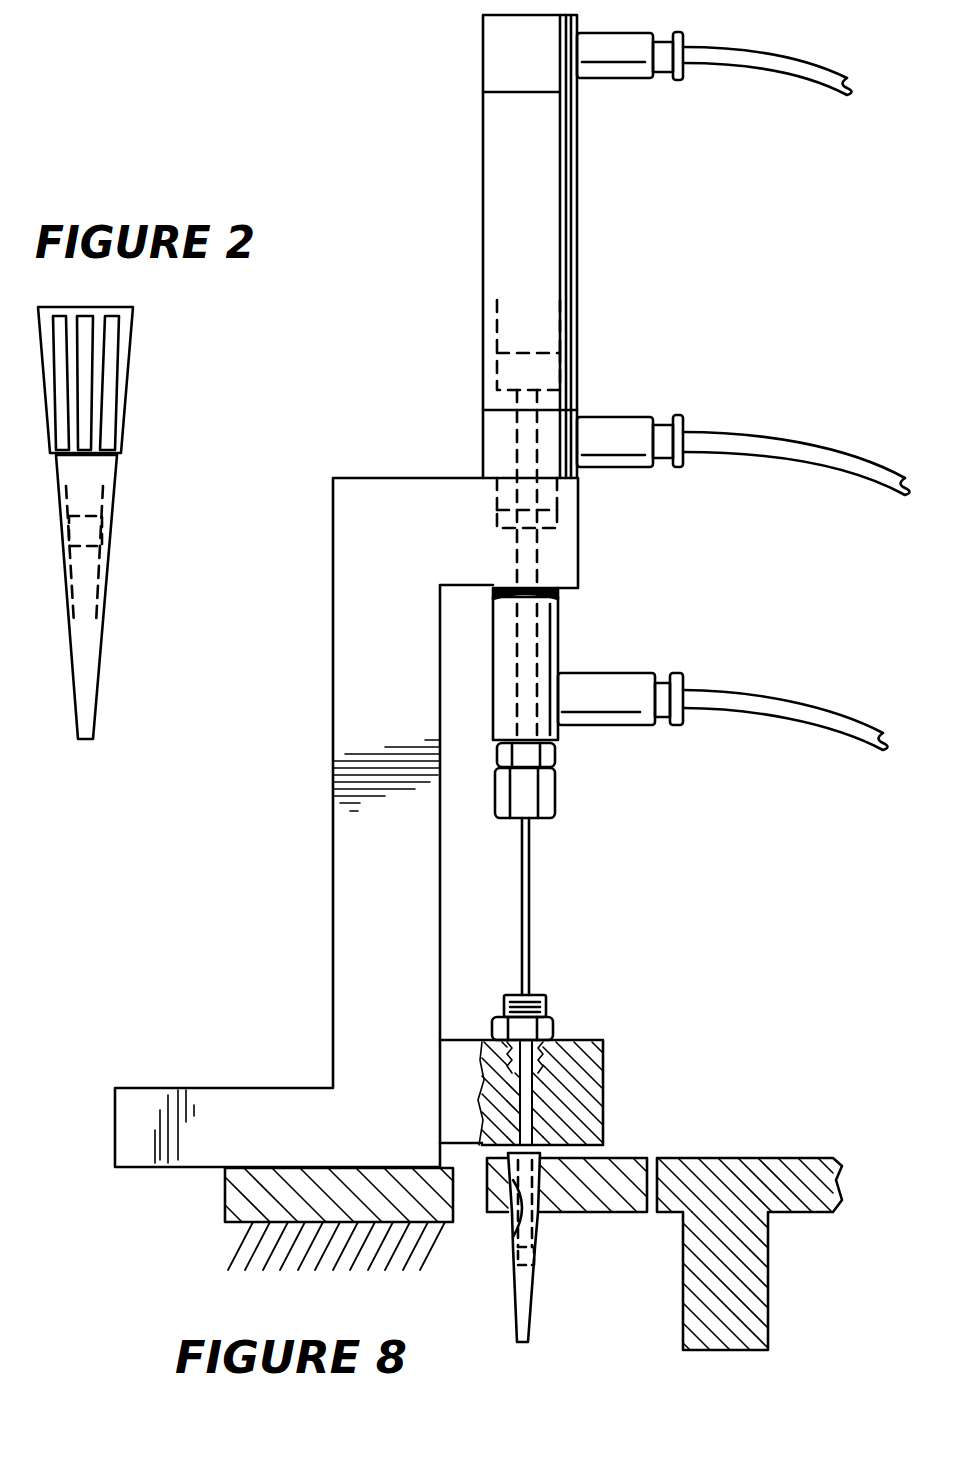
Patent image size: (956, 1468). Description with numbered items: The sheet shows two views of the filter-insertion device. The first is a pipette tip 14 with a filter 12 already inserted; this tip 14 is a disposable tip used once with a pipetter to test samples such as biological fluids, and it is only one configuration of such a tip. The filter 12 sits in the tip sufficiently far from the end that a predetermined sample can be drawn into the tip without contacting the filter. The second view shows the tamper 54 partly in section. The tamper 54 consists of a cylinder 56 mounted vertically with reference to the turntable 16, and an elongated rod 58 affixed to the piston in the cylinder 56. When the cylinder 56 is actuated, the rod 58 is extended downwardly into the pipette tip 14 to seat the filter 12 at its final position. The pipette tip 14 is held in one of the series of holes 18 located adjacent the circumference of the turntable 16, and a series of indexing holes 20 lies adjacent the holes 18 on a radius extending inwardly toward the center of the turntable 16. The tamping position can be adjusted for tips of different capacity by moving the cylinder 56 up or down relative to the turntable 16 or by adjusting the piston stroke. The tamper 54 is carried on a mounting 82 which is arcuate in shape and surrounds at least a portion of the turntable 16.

In FIG. 2, the filter 12 is at (102, 531).
In FIG. 8, the filter 12 is at (530, 1253).
In FIG. 2, the pipette tip 14 is at (89, 652).
In FIG. 8, the pipette tip 14 is at (525, 1295).
In FIG. 8, the turntable 16 is at (757, 1167).
In FIG. 8, the holes 18 is at (515, 1233).
In FIG. 8, the indexing holes 20 is at (647, 1157).
In FIG. 8, the tamper 54 is at (630, 238).
In FIG. 8, the cylinder 56 is at (546, 182).
In FIG. 8, the elongated rod 58 is at (527, 898).
In FIG. 8, the mounting 82 is at (245, 1190).